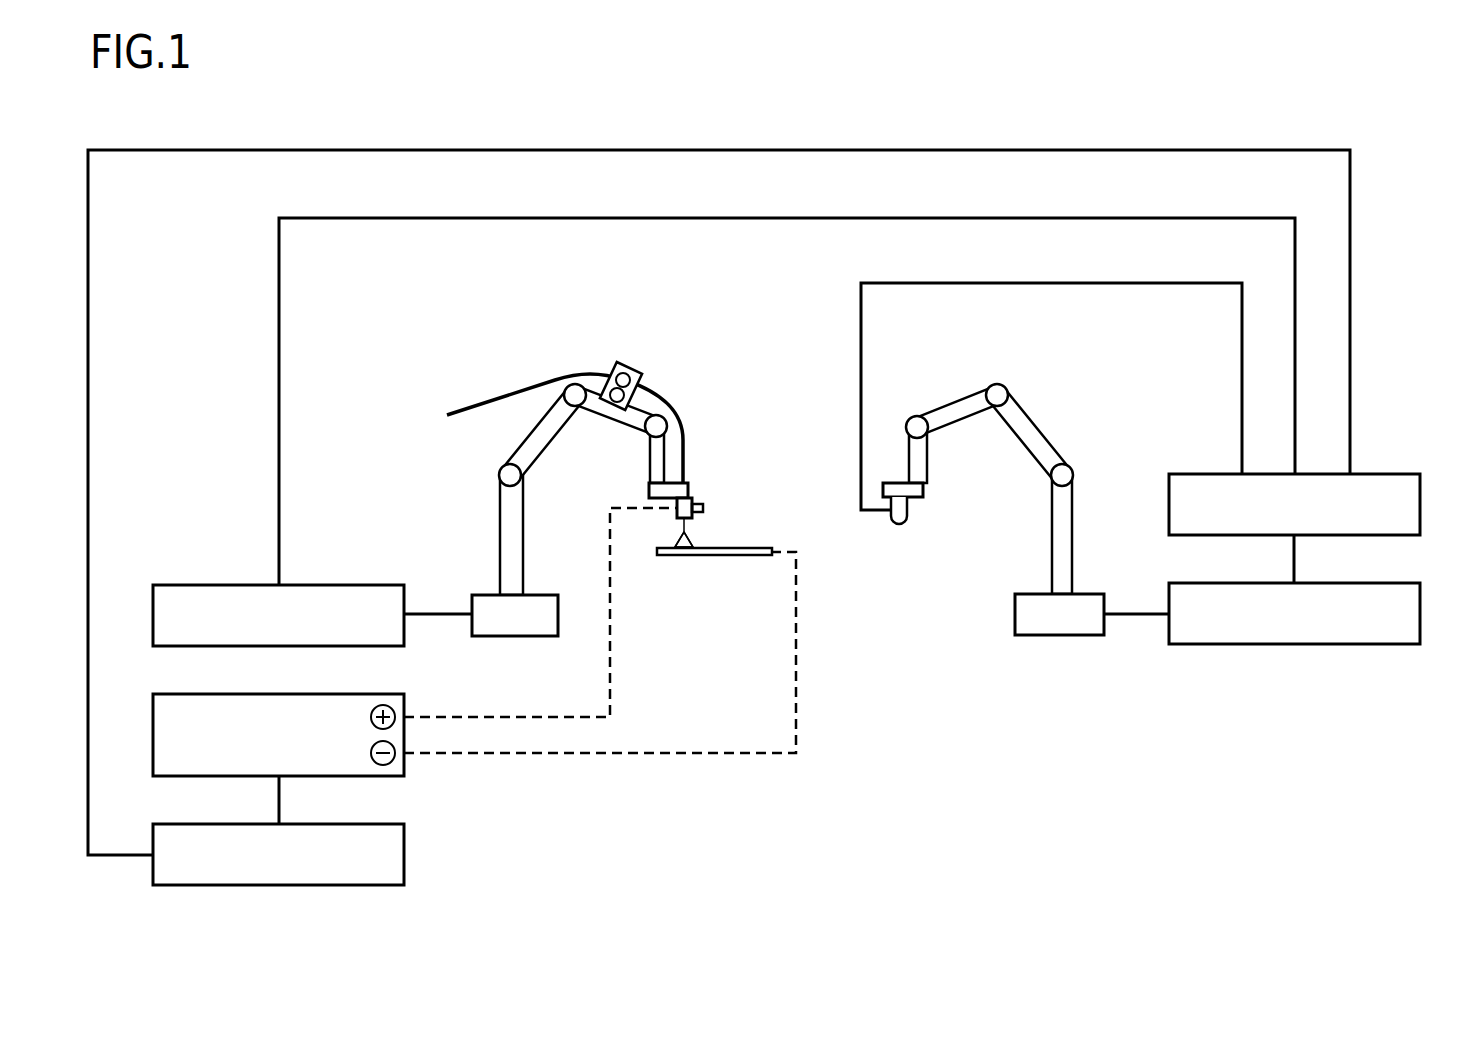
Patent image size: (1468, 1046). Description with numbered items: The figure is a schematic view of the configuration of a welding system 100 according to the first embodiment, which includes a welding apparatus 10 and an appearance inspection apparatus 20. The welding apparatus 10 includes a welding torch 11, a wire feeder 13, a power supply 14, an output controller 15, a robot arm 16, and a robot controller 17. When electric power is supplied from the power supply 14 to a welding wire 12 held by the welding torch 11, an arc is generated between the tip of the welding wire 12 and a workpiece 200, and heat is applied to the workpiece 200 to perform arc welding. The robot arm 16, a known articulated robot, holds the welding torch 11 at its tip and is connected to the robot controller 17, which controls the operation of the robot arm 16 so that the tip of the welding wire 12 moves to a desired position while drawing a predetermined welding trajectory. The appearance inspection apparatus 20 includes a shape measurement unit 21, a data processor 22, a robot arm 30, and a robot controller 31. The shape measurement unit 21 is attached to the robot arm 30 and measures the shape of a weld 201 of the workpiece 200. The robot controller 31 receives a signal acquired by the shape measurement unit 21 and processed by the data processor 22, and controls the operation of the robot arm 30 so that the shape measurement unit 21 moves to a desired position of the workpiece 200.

The welding system 100 is at (1109, 112).
The welding apparatus 10 is at (464, 610).
The welding torch 11 is at (673, 507).
The welding wire 12 is at (470, 404).
The wire feeder 13 is at (611, 370).
The power supply 14 is at (197, 694).
The output controller 15 is at (197, 824).
The robot arm 16 is at (525, 442).
The robot controller 17 is at (197, 584).
The workpiece 200 is at (758, 548).
The weld 201 is at (693, 574).
The appearance inspection apparatus 20 is at (1154, 530).
The shape measurement unit 21 is at (908, 507).
The data processor 22 is at (1369, 474).
The robot arm 30 is at (1035, 424).
The robot controller 31 is at (1369, 583).